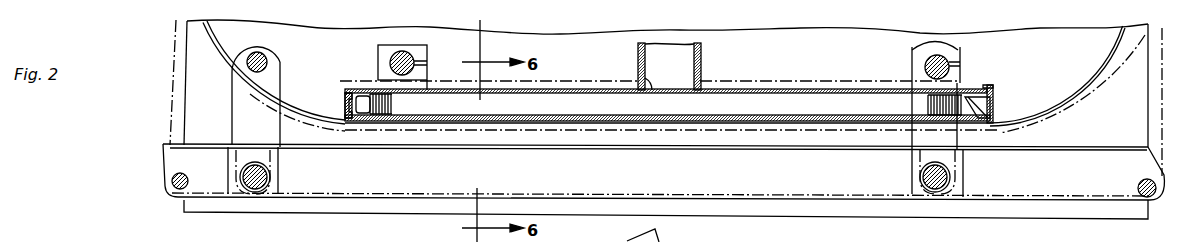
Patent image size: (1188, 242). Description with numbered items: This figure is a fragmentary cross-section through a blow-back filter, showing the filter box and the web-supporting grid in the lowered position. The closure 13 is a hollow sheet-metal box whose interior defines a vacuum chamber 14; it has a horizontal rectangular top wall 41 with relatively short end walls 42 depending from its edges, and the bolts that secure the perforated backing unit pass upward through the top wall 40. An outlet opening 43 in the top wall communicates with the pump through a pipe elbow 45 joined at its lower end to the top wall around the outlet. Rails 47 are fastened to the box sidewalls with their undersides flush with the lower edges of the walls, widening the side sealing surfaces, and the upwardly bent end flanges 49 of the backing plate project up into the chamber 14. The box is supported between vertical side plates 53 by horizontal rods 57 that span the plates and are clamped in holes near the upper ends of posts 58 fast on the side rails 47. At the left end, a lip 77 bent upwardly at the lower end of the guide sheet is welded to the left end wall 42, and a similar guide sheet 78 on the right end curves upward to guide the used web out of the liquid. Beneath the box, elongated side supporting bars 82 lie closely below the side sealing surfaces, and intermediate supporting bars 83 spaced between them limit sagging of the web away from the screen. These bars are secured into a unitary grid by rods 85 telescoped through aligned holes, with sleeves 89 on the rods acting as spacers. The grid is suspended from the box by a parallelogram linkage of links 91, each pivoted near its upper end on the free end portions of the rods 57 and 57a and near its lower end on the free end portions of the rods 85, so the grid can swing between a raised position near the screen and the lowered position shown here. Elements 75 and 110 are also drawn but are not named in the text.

The closure 13 is at (782, 89).
The chamber 14 is at (808, 100).
The top wall 40 is at (383, 97).
The top wall 41 is at (737, 90).
The end wall 42 is at (347, 92).
The outlet opening 43 is at (643, 84).
The pipe elbow 45 is at (638, 55).
The rail 47 is at (856, 90).
The end flange 49 is at (985, 90).
The side plate 53 is at (188, 104).
The horizontal rod 57 is at (402, 51).
The rod 57a is at (268, 60).
The post 58 is at (427, 47).
The hinge tab 75 is at (226, 48).
The lip 77 is at (343, 100).
The guide sheet 78 is at (1088, 86).
The side supporting bar 82 is at (1038, 193).
The intermediate supporting bar 83 is at (872, 190).
The rod 85 is at (260, 192).
The sleeve 89 is at (271, 178).
The link 91 is at (240, 128).
The rivet 110 is at (171, 183).